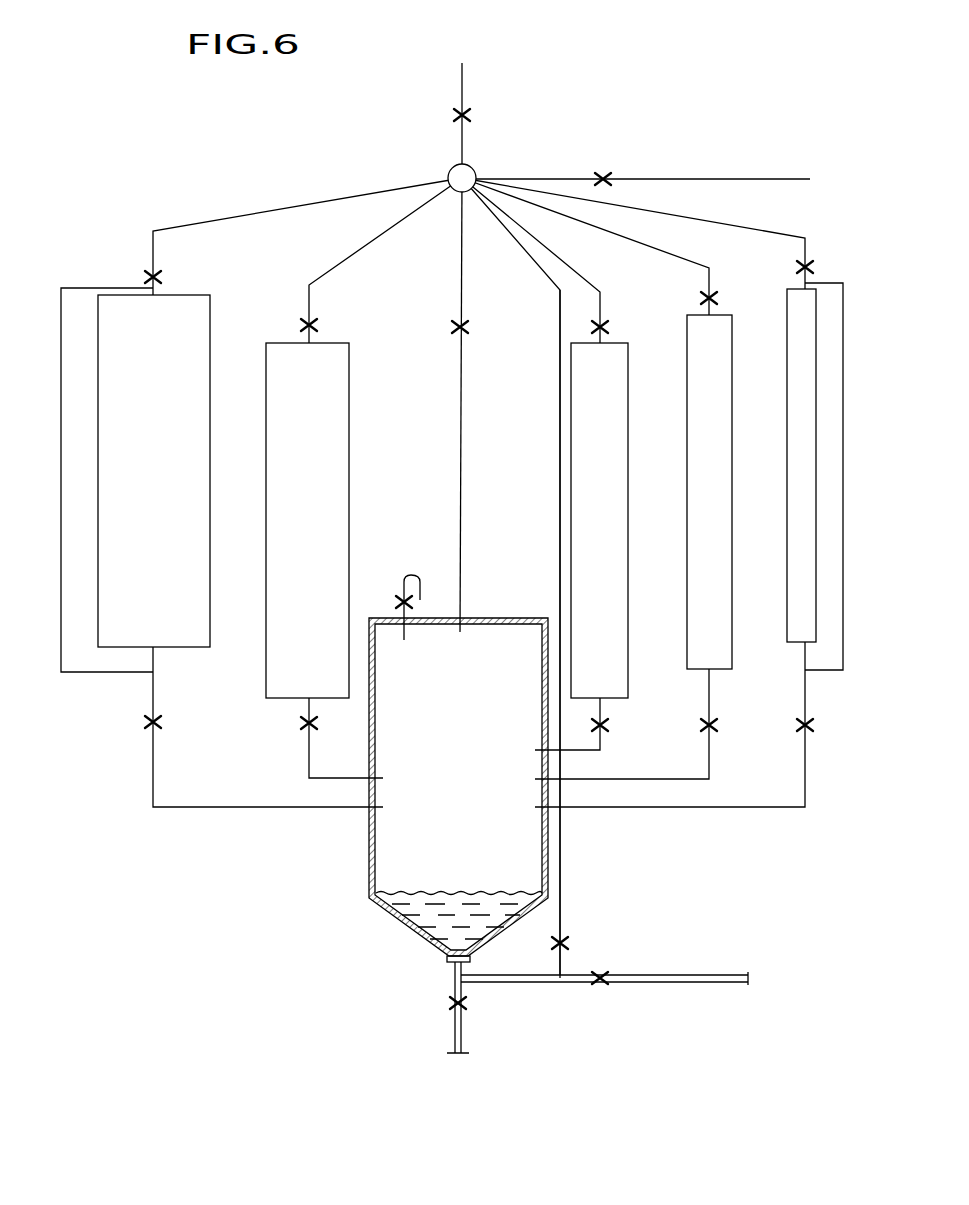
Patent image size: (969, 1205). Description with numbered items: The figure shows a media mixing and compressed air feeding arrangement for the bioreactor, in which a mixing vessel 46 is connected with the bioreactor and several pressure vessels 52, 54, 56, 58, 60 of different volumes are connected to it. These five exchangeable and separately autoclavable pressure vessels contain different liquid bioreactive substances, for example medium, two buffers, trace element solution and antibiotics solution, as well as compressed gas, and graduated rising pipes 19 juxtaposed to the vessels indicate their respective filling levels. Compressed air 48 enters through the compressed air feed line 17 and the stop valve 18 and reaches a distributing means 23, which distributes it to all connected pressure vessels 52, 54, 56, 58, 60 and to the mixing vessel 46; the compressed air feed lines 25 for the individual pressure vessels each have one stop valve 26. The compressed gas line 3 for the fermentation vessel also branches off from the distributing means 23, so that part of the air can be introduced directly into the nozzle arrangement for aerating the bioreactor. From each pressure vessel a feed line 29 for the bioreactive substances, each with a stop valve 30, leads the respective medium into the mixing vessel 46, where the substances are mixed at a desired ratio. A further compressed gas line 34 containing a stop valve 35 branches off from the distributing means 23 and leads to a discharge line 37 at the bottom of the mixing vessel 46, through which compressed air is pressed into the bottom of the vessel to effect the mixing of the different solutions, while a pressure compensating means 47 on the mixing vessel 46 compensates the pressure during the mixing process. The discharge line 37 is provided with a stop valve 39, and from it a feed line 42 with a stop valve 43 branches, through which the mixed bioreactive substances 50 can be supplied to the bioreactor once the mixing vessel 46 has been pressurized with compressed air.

The compressed gas line 3 is at (697, 178).
The compressed air feed line 17 is at (463, 70).
The stop valve 18 is at (470, 118).
The rising pipe 19 is at (61, 368).
The distributing means 23 is at (470, 180).
The compressed air feed line 25 is at (268, 206).
The stop valve 26 is at (604, 170).
The feed line 29 is at (150, 770).
The stop valve 30 is at (163, 722).
The compressed gas line 34 is at (560, 467).
The stop valve 35 is at (568, 943).
The discharge line 37 is at (452, 978).
The stop valve 39 is at (468, 1008).
The feed line 42 is at (685, 975).
The stop valve 43 is at (600, 992).
The mixing vessel 46 is at (369, 853).
The pressure compensating means 47 is at (398, 602).
The compressed air 48 is at (484, 742).
The mixed bioreactive substances 50 is at (440, 923).
The pressure vessel 52 is at (98, 437).
The pressure vessel 54 is at (340, 488).
The pressure vessel 56 is at (619, 465).
The pressure vessel 58 is at (728, 457).
The pressure vessel 60 is at (808, 450).